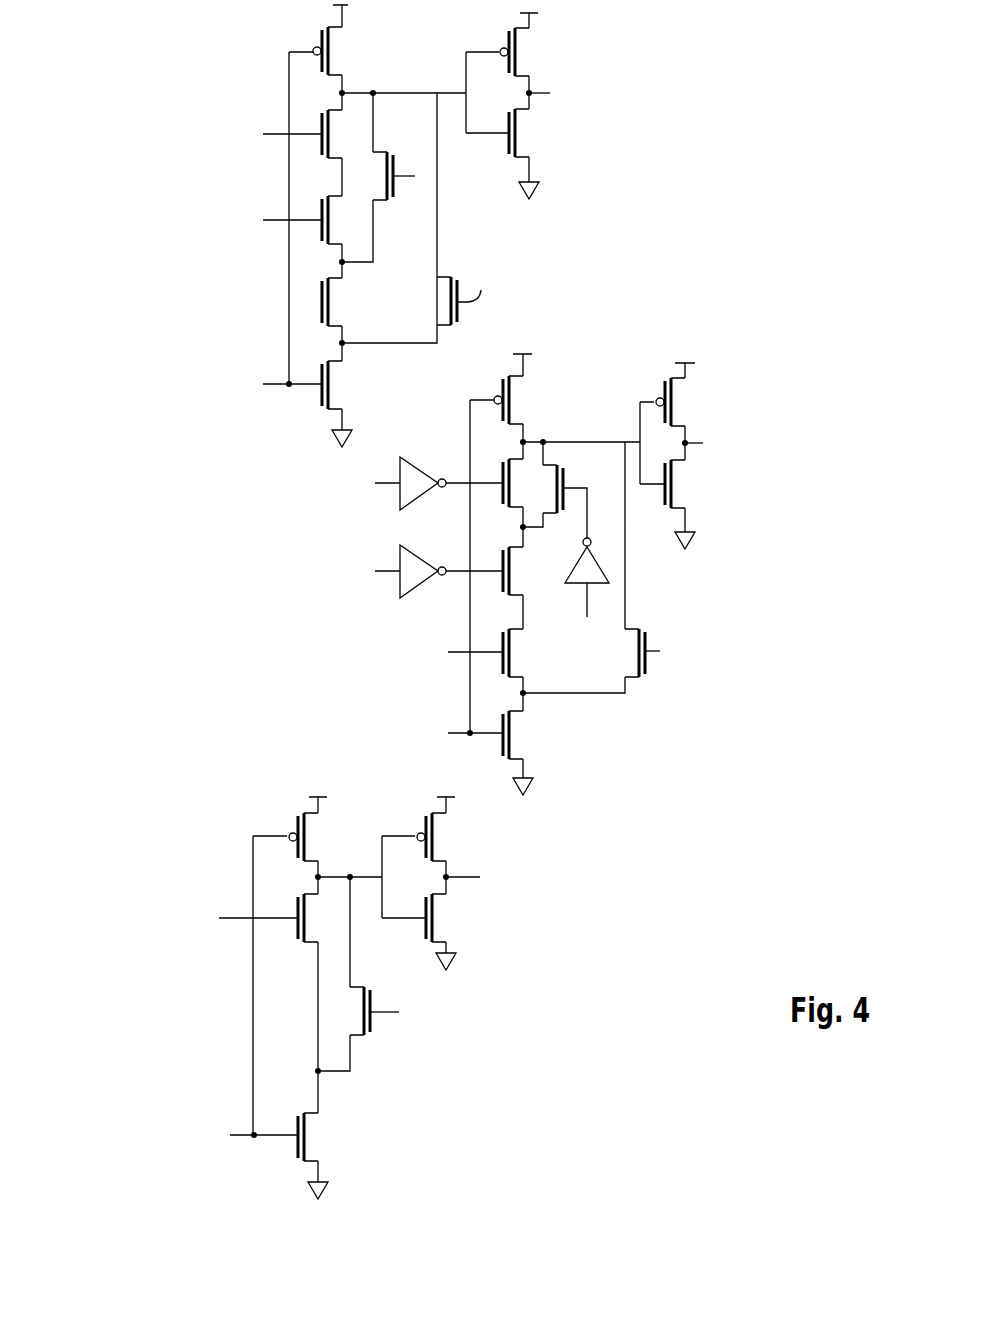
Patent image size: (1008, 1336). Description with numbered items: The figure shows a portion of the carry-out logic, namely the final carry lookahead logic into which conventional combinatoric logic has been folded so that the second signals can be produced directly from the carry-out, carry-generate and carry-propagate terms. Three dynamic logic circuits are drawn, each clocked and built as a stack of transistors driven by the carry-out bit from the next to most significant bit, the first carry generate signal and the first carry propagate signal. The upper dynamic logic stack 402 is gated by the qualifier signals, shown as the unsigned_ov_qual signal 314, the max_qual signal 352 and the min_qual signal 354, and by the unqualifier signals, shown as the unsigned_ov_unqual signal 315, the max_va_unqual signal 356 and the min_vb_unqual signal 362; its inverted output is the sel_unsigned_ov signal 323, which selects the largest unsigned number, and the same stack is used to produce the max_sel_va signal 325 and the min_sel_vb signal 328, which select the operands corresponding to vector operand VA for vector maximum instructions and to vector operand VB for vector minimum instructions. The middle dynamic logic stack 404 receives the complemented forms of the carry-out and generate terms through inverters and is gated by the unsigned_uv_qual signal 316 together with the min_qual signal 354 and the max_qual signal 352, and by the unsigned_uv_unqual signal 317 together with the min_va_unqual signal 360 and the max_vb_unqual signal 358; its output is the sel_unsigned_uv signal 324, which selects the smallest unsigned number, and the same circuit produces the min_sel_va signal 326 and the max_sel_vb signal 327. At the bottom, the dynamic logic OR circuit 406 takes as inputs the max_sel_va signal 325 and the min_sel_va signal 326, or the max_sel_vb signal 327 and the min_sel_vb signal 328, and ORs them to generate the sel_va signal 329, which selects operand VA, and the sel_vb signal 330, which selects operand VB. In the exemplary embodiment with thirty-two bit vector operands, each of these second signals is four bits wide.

The dynamic logic stack 402 is at (231, 72).
The dynamic logic stack 404 is at (638, 734).
The dynamic logic OR circuit 406 is at (504, 1078).
The sel_unsigned_ov signal 323 is at (557, 123).
The max_sel_va signal 325 is at (211, 942).
The min_sel_vb signal 328 is at (556, 570).
The unsigned_ov_unqual signal 315 is at (484, 290).
The max_va_unqual unqualifier signal 356 is at (577, 251).
The min_vb_unqual unqualifier signal 362 is at (574, 280).
The unsigned_ov_qual qualifier signal 314 is at (322, 302).
The max_qual qualifier signal 352 is at (276, 498).
The min_qual qualifier signal 354 is at (280, 497).
The sel_unsigned_uv signal 324 is at (710, 475).
The min_sel_va signal 326 is at (407, 1040).
The max_sel_vb signal 327 is at (459, 696).
The unsigned_uv_unqual signal 317 is at (667, 685).
The min_va_unqual unqualifier signal 360 is at (755, 646).
The max_vb_unqual unqualifier signal 358 is at (758, 675).
The unsigned_uv_qual qualifier signal 316 is at (448, 652).
The sel_va signal 329 is at (487, 905).
The sel_vb signal 330 is at (539, 885).